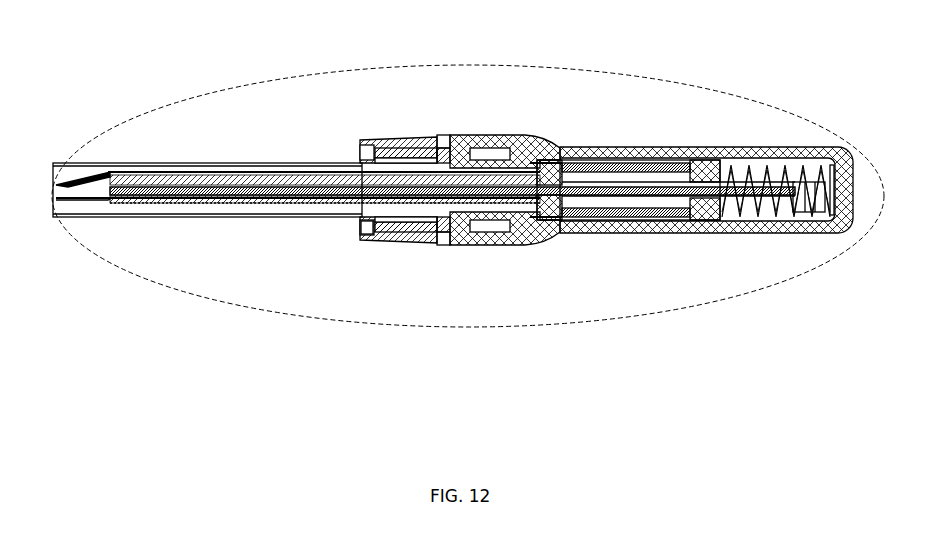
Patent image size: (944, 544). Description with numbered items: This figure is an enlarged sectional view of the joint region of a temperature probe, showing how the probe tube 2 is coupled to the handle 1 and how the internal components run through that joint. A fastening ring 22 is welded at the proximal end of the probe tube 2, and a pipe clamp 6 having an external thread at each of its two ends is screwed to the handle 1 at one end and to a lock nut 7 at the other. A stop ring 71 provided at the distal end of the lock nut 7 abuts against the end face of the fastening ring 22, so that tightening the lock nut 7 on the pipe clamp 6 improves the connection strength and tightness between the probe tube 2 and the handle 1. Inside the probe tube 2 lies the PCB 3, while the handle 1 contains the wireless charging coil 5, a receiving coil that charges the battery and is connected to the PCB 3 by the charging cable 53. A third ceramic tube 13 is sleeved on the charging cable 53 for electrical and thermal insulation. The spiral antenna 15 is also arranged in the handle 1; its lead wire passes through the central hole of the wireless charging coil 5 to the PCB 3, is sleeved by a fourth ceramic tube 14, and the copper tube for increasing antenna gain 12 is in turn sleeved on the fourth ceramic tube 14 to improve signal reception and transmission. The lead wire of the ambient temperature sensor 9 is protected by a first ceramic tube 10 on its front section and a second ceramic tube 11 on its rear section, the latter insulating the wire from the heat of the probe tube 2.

The handle 1 is at (711, 149).
The probe tube 2 is at (156, 165).
The PCB 3 is at (86, 181).
The wireless charging coil 5 is at (620, 160).
The pipe clamp 6 is at (443, 137).
The lock nut 7 is at (396, 140).
The ambient temperature sensor 9 is at (819, 222).
The first ceramic tube 10 is at (765, 214).
The second ceramic tube 11 is at (212, 203).
The copper tube for increasing antenna gain 12 is at (108, 180).
The third ceramic tube 13 is at (512, 150).
The fourth ceramic tube 14 is at (228, 172).
The antenna 15 is at (773, 150).
The fastening ring 22 is at (398, 242).
The charging cable 53 is at (552, 158).
The stop ring 71 is at (362, 242).